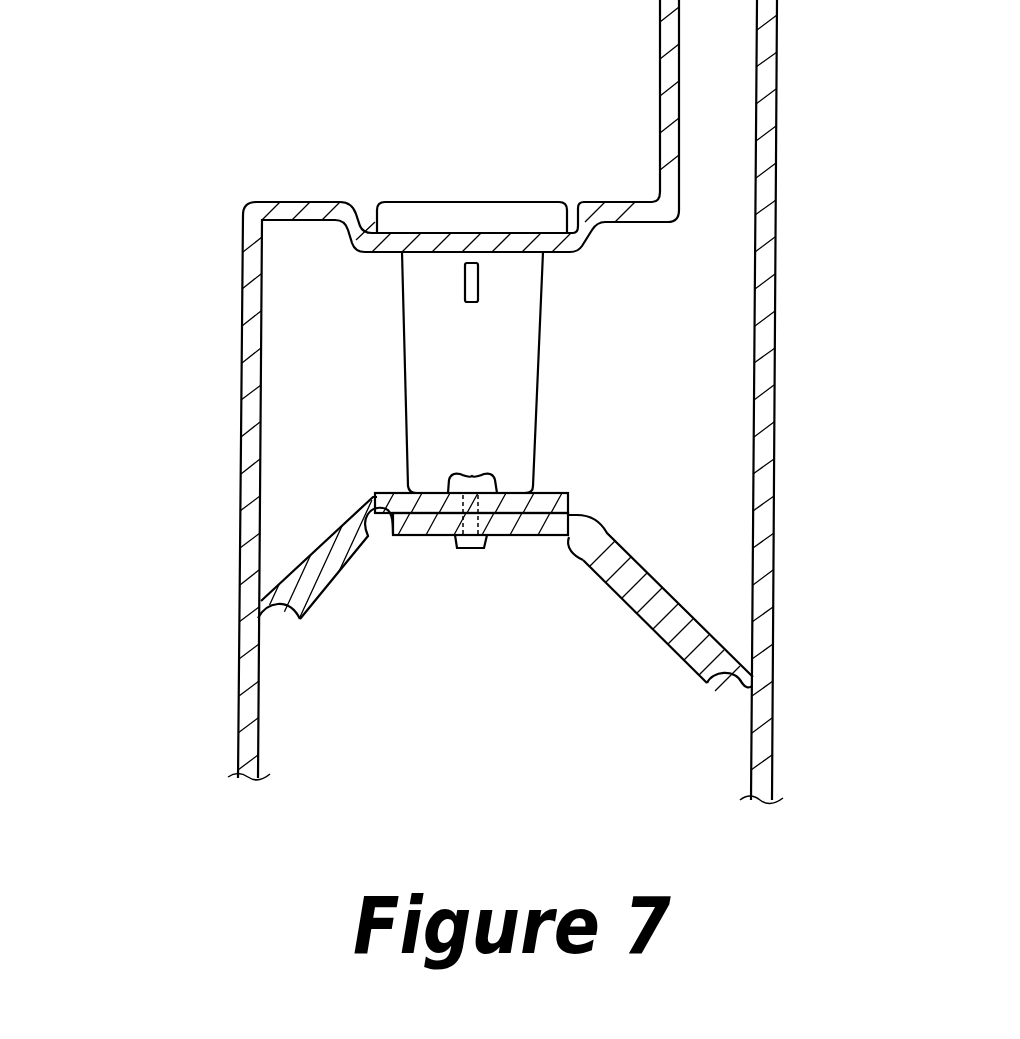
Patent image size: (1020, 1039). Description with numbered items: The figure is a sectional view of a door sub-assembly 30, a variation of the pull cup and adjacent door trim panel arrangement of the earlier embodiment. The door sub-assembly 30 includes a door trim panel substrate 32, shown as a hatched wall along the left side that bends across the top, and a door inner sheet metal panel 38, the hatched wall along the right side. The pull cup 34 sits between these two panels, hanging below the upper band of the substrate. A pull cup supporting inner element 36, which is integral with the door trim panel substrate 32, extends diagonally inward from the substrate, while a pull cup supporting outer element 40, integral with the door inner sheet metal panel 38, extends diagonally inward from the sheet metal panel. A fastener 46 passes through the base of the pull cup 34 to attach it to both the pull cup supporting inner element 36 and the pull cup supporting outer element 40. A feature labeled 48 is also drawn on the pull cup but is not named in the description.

The door sub-assembly 30 is at (96, 197).
The door trim panel substrate 32 is at (240, 457).
The pull cup 34 is at (520, 416).
The pull cup supporting inner element 36 is at (335, 573).
The door inner sheet metal panel 38 is at (776, 303).
The pull cup supporting outer element 40 is at (638, 620).
The fastener 46 is at (462, 557).
The slot 48 is at (470, 302).